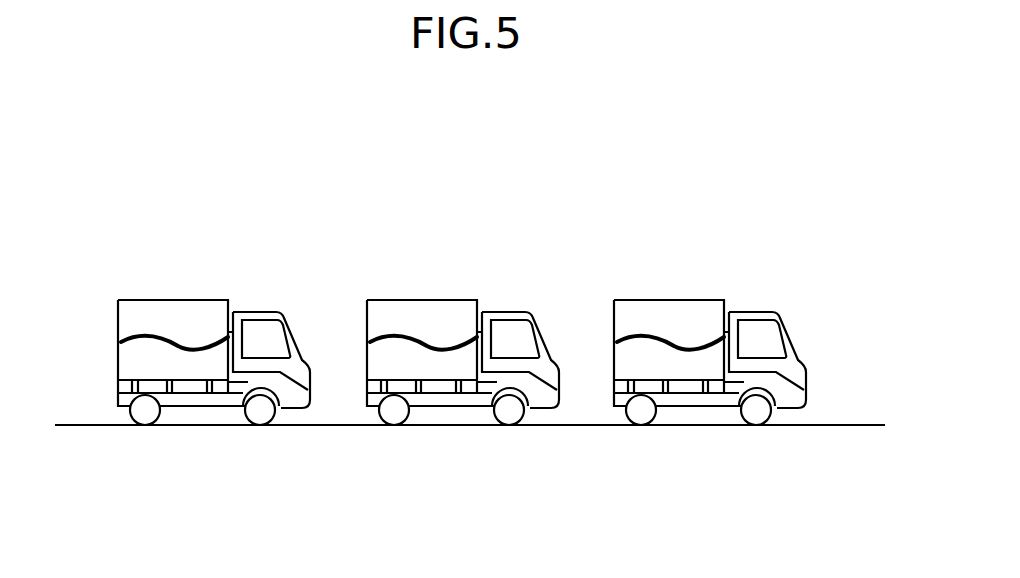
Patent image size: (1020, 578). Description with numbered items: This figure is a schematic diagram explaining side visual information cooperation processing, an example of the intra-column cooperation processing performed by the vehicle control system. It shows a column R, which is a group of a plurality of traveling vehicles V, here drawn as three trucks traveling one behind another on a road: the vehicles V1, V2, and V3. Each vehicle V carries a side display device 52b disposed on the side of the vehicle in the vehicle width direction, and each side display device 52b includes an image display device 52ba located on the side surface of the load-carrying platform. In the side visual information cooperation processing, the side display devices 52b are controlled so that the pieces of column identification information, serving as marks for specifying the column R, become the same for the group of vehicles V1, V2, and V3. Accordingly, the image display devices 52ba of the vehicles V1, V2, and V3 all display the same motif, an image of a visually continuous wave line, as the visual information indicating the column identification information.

The vehicle V is at (462, 329).
The vehicle V1 is at (710, 329).
The vehicle V2 is at (463, 329).
The vehicle V3 is at (178, 294).
The image display device 52ba is at (183, 366).
The side display device 52b is at (422, 406).
The column R is at (327, 190).